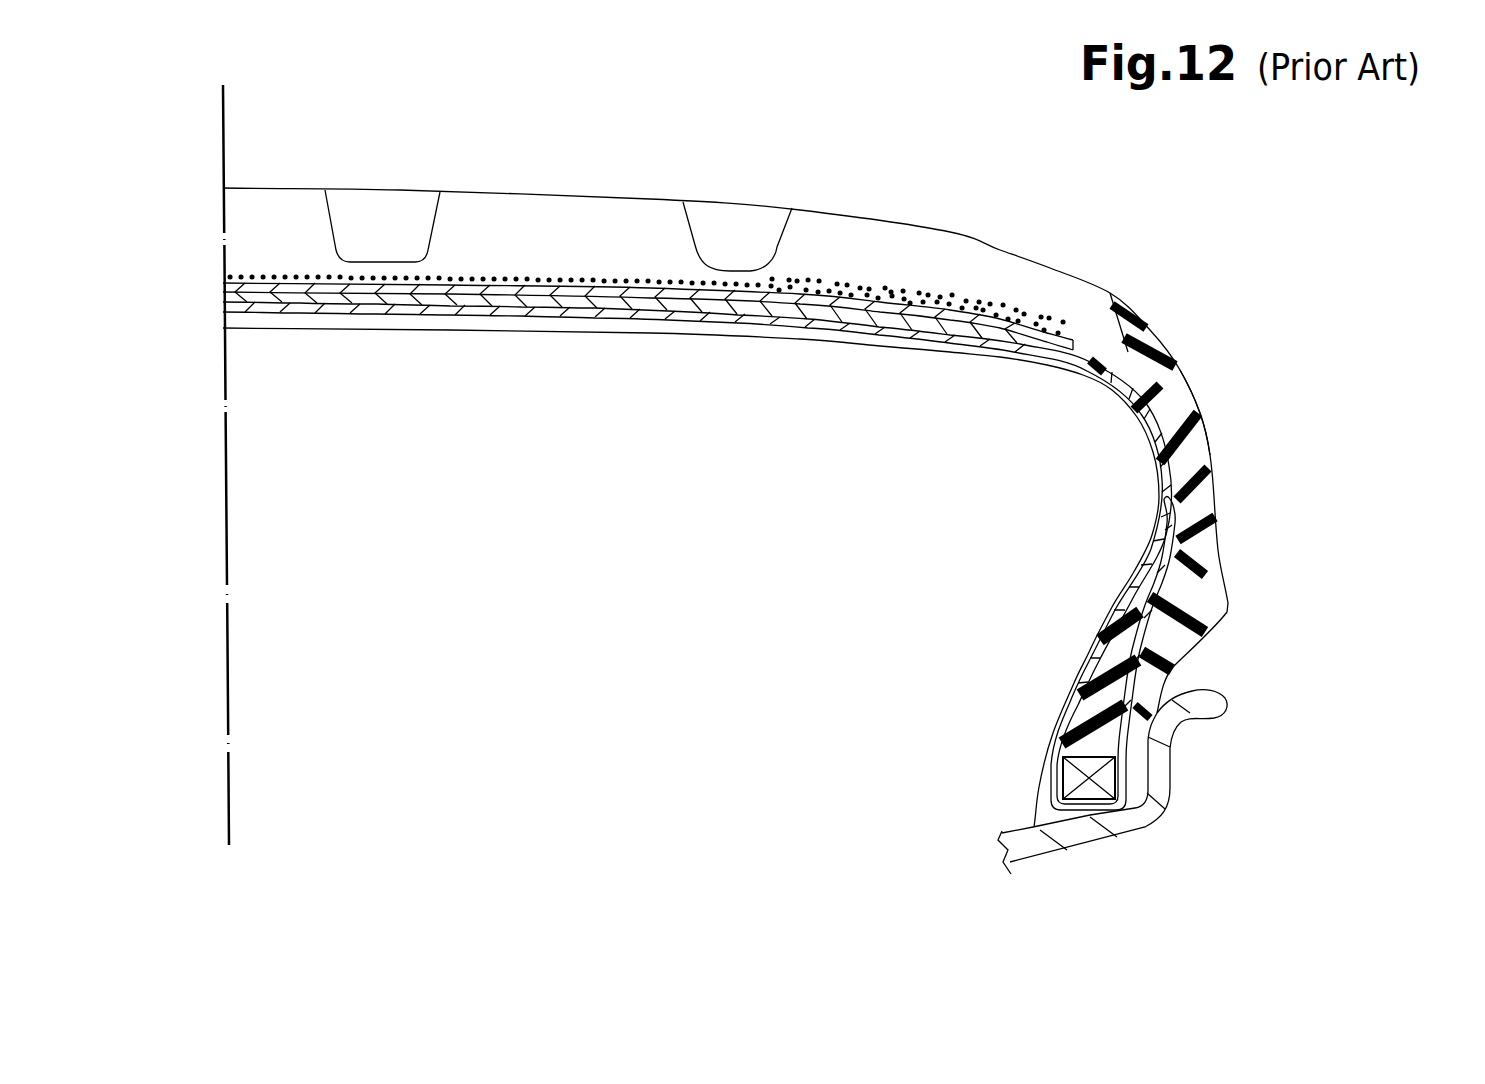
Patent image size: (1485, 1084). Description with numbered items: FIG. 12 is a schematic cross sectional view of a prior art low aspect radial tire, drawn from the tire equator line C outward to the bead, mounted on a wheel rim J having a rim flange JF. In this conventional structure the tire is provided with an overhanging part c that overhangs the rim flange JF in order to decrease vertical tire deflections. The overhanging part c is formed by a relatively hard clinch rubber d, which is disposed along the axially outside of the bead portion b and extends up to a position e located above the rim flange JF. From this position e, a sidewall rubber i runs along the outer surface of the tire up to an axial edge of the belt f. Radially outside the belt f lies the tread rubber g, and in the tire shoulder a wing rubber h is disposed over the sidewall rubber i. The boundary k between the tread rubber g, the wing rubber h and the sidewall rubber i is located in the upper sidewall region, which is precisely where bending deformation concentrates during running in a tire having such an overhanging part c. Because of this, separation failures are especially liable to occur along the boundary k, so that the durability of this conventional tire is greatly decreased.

The tire equator center line C is at (220, 451).
The tread rubber g is at (978, 253).
The wing rubber h is at (1148, 342).
The boundary k is at (1200, 413).
The sidewall rubber i is at (1200, 453).
The belt f is at (940, 328).
The clinch rubber d is at (1198, 595).
The overhanging part c is at (1218, 597).
The position above the rim flange e is at (1232, 605).
The bead portion b is at (1230, 635).
The rim flange JF is at (1224, 699).
The wheel rim J is at (1092, 843).